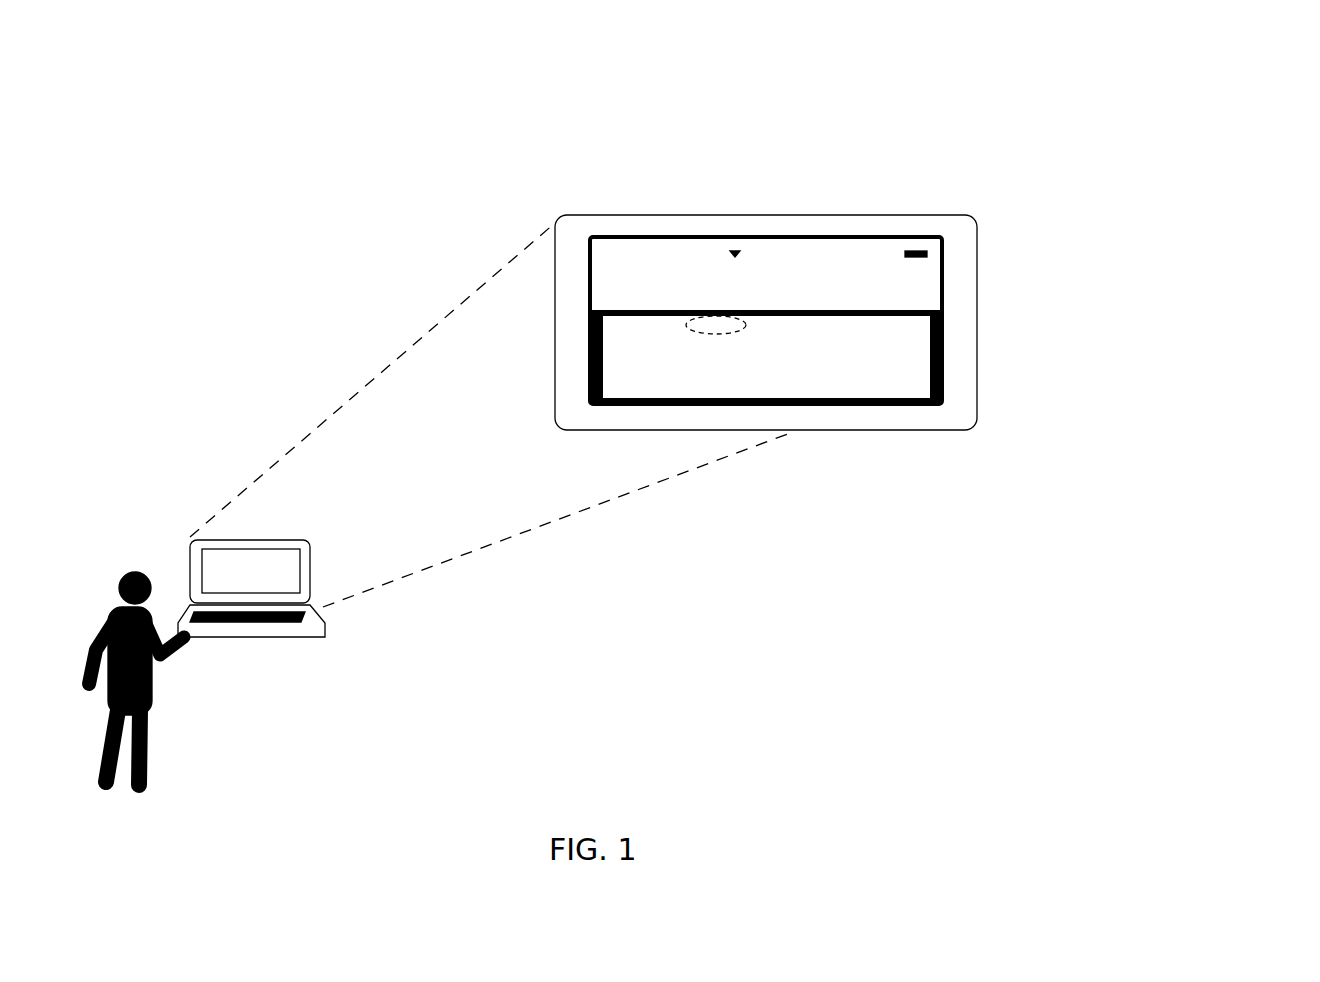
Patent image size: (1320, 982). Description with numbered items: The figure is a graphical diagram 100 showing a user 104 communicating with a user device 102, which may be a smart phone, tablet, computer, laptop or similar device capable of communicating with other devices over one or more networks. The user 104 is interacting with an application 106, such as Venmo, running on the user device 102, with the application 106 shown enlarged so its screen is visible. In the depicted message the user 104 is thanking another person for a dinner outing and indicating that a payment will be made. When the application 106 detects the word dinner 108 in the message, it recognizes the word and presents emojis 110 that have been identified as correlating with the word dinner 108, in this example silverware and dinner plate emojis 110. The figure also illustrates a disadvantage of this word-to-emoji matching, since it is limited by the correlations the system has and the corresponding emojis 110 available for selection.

The graphical diagram 100 is at (1208, 107).
The user device 102 is at (307, 541).
The user 104 is at (150, 760).
The application 106 is at (992, 249).
The word dinner 108 is at (795, 323).
The emojis 110 is at (880, 373).